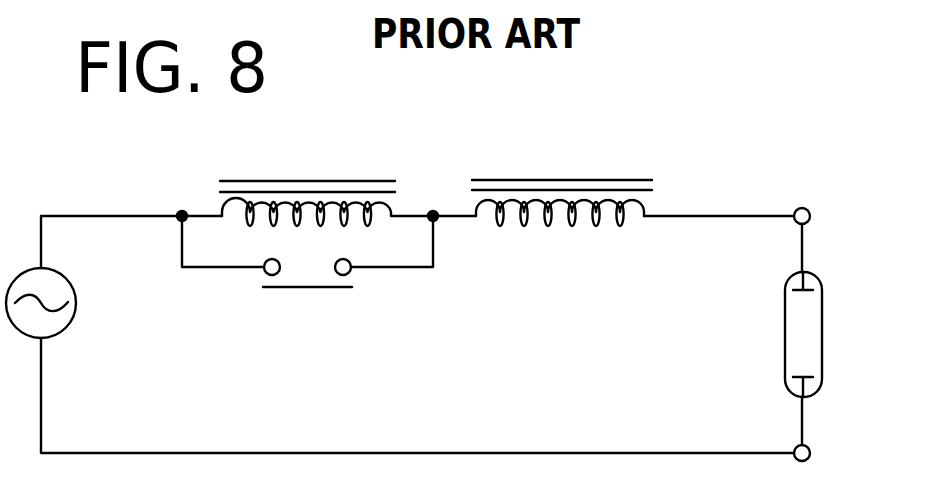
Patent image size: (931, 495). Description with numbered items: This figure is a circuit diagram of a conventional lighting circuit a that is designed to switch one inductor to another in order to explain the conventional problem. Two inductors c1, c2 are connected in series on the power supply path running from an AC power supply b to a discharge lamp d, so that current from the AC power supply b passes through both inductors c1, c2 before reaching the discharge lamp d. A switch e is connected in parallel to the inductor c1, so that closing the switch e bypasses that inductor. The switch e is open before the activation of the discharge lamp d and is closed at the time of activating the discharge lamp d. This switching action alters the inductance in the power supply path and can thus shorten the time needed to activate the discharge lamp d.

The lighting circuit a is at (745, 146).
The AC power supply b is at (72, 320).
The inductor c1 is at (350, 164).
The inductor c2 is at (611, 164).
The discharge lamp d is at (785, 338).
The switch e is at (303, 287).